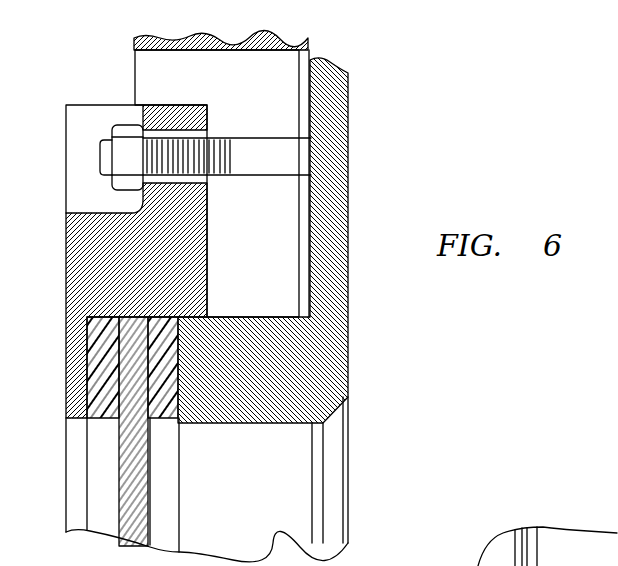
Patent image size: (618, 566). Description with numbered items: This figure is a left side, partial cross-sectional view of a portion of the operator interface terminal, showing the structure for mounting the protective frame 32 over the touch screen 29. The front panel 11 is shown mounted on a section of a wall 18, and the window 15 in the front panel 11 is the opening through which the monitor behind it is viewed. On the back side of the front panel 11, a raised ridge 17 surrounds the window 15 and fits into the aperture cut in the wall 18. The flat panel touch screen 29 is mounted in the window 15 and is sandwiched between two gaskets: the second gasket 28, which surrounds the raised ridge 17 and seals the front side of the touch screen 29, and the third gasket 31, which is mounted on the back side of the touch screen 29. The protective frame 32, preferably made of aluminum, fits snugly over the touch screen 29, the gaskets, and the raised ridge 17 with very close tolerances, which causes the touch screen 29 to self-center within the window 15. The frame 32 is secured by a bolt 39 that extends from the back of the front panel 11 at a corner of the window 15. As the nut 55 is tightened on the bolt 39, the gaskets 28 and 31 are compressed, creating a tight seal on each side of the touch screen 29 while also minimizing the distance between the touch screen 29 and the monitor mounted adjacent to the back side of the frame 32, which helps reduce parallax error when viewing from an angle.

The front panel 11 is at (348, 358).
The window 15 is at (284, 520).
The raised ridge 17 is at (237, 315).
The wall 18 is at (188, 35).
The second gasket 28 is at (163, 420).
The touch screen 29 is at (150, 505).
The third gasket 31 is at (100, 422).
The protective frame 32 is at (214, 216).
The bolt 39 is at (250, 138).
The nut 55 is at (127, 127).